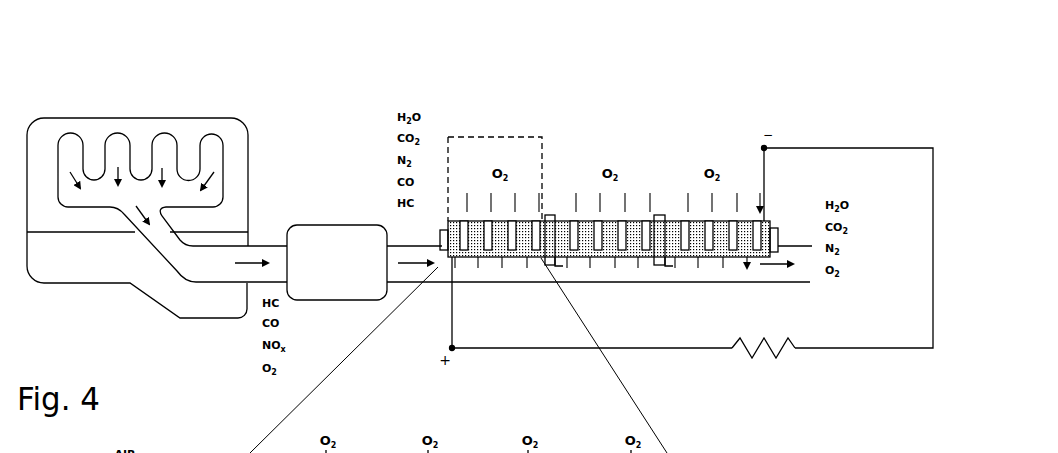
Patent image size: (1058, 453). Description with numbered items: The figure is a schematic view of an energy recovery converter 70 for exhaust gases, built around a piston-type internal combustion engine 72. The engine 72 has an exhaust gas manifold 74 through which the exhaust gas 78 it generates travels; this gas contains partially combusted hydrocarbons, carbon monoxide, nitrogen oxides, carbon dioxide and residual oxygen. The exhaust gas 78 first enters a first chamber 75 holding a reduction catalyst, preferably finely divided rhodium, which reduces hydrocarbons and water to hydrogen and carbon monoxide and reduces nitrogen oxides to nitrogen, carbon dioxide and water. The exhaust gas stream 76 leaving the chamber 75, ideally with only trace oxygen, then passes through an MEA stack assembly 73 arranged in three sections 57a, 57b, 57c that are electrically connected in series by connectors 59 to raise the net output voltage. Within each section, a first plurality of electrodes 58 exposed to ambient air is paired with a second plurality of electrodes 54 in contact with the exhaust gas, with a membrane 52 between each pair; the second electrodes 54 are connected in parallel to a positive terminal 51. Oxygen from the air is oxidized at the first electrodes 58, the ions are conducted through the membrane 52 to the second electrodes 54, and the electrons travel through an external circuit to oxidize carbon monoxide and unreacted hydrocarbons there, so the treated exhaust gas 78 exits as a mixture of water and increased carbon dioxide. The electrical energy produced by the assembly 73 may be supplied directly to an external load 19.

The converter 70 is at (837, 80).
The piston-type internal combustion engine 72 is at (78, 118).
The exhaust gas manifold 74 is at (227, 140).
The exhaust gas 78 is at (255, 268).
The first chamber 75 is at (310, 300).
The exhaust gas stream 76 is at (423, 268).
The MEA stack assembly 73 is at (514, 259).
The first plurality of electrodes 58 is at (462, 217).
The section 57a is at (528, 217).
The section 57b is at (640, 217).
The section 57c is at (683, 216).
The connectors 59 is at (558, 266).
The membrane 52 is at (577, 258).
The second plurality of electrodes 54 is at (708, 258).
The positive terminal 51 is at (456, 352).
The external load 19 is at (790, 352).